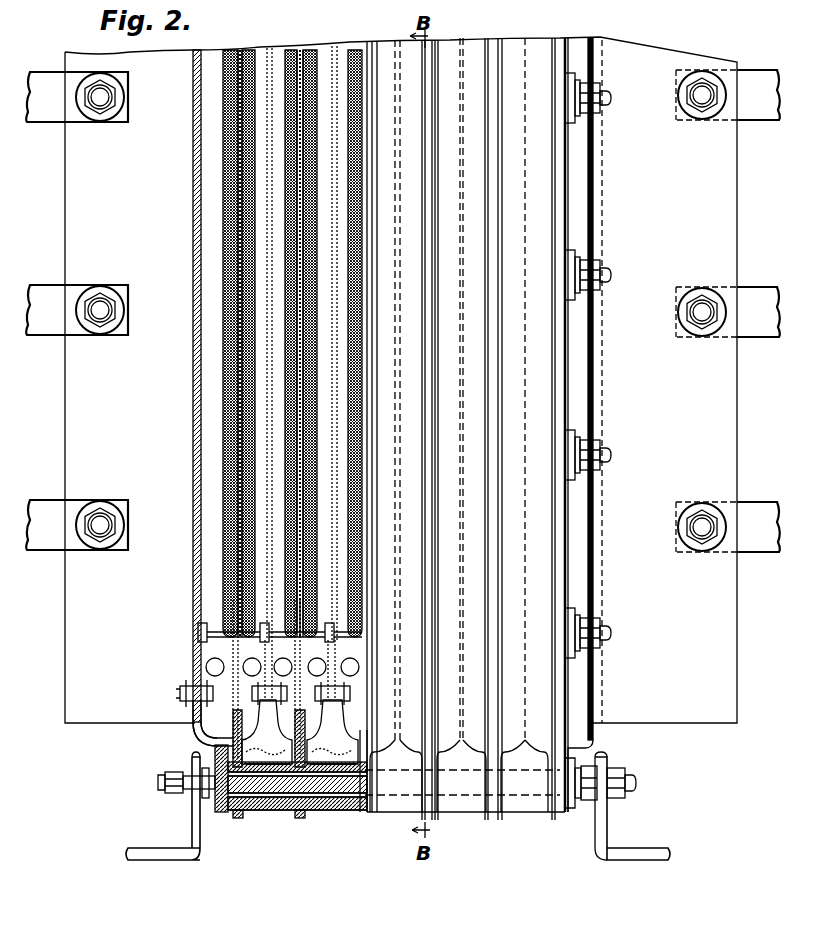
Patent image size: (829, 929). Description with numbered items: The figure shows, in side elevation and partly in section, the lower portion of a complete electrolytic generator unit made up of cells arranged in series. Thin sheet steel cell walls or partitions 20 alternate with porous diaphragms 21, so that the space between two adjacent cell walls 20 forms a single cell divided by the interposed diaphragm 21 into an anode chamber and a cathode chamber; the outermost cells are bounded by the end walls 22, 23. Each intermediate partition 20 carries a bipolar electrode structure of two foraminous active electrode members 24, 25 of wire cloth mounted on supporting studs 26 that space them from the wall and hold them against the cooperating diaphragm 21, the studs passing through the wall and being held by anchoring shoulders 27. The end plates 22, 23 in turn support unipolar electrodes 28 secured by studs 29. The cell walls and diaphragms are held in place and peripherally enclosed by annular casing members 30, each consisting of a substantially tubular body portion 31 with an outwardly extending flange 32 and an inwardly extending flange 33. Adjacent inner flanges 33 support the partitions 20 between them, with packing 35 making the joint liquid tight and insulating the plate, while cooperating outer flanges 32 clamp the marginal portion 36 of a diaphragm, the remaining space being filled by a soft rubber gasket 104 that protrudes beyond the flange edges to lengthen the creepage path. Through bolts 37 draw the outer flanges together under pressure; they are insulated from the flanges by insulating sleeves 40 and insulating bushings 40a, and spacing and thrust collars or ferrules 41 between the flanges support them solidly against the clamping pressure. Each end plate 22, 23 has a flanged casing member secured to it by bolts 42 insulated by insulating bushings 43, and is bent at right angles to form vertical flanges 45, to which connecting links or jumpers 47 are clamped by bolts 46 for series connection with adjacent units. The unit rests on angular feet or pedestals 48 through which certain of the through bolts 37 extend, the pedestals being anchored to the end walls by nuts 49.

The cell walls or partitions 20 is at (335, 563).
The porous diaphragms 21 is at (300, 418).
The end wall 22 is at (195, 230).
The end wall 23 is at (600, 415).
The active electrode member 24 is at (320, 286).
The active electrode member 25 is at (345, 316).
The supporting studs 26 is at (258, 641).
The anchoring shoulders 27 is at (300, 602).
The unipolar electrodes 28 is at (228, 173).
The studs 29 is at (210, 632).
The annular frames or casing members 30 is at (230, 734).
The annular body portion 31 is at (578, 705).
The outwardly extending flange 32 is at (500, 48).
The inwardly extending flange 33 is at (200, 676).
The packing 35 is at (305, 742).
The marginal portion of diaphragm 36 is at (305, 727).
The through bolts 37 is at (611, 100).
The insulating sleeves 40 is at (300, 815).
The insulating bushings 40a is at (239, 818).
The spacing and thrust collars or ferrules 41 is at (265, 812).
The bolts 42 is at (182, 692).
The insulating bushings 43 is at (168, 730).
The vertical flanges 45 is at (80, 687).
The bolts 46 is at (103, 97).
The connecting links or jumpers 47 is at (52, 122).
The angular feet or pedestals 48 is at (165, 862).
The nuts 49 is at (176, 790).
The gasket 104 is at (487, 92).